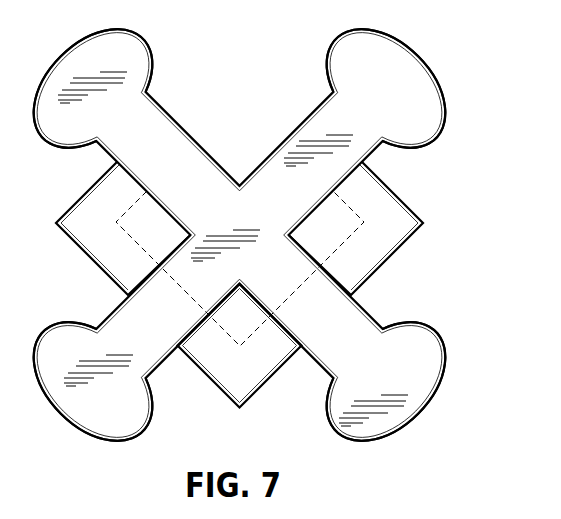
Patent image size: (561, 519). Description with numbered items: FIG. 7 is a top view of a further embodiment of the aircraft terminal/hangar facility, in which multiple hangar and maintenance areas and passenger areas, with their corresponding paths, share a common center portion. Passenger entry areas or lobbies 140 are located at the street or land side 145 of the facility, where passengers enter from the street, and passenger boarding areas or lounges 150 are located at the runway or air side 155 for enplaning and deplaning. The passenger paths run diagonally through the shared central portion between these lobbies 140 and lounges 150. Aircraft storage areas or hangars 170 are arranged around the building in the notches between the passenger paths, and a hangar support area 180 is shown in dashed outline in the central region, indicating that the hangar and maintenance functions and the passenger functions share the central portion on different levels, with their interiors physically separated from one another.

The passenger entry area or lobby 140 is at (68, 72).
The street or land side 145 is at (250, 57).
The passenger boarding area or lounge 150 is at (118, 428).
The runway or air side 155 is at (235, 451).
The aircraft storage area or hangar 170 is at (65, 222).
The hangar support area 180 is at (345, 208).